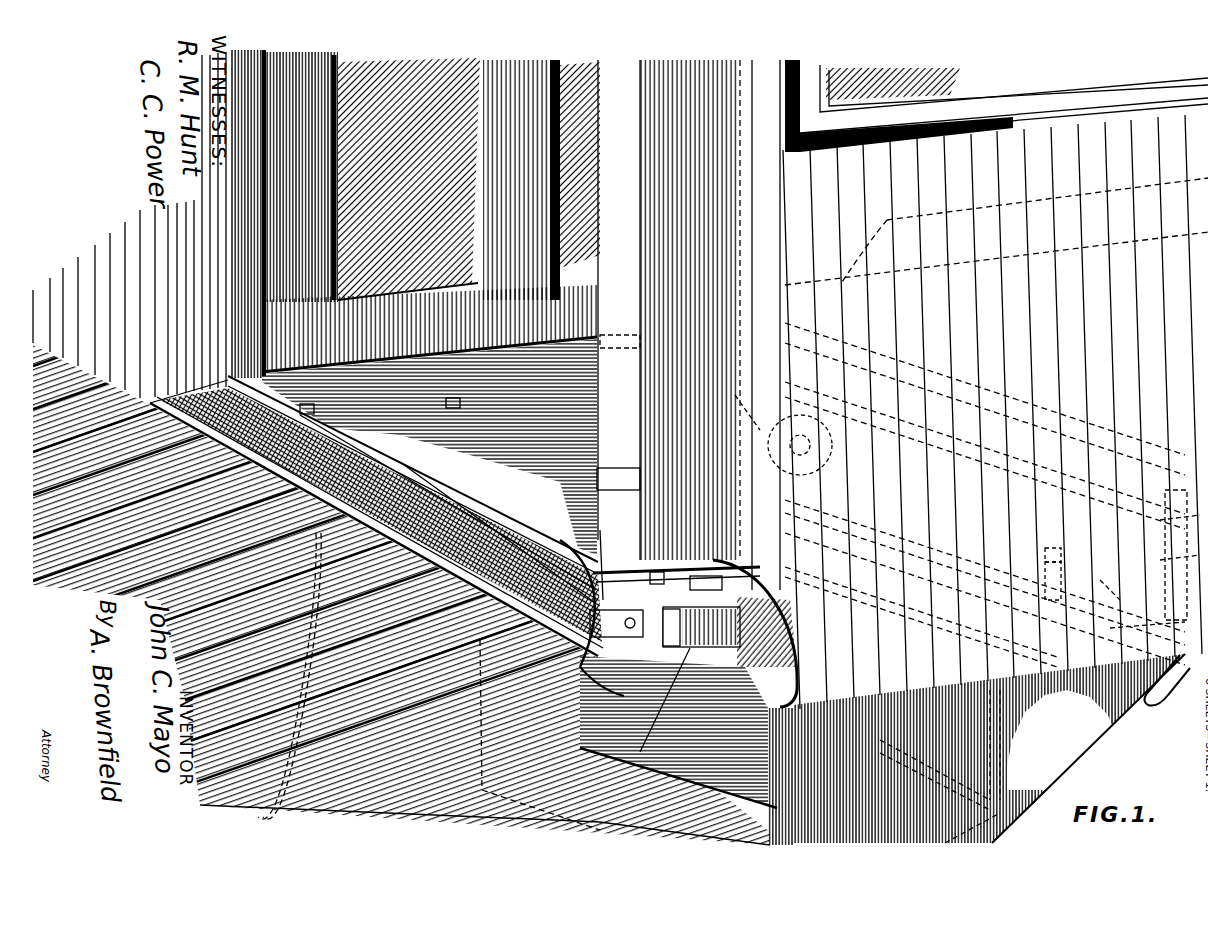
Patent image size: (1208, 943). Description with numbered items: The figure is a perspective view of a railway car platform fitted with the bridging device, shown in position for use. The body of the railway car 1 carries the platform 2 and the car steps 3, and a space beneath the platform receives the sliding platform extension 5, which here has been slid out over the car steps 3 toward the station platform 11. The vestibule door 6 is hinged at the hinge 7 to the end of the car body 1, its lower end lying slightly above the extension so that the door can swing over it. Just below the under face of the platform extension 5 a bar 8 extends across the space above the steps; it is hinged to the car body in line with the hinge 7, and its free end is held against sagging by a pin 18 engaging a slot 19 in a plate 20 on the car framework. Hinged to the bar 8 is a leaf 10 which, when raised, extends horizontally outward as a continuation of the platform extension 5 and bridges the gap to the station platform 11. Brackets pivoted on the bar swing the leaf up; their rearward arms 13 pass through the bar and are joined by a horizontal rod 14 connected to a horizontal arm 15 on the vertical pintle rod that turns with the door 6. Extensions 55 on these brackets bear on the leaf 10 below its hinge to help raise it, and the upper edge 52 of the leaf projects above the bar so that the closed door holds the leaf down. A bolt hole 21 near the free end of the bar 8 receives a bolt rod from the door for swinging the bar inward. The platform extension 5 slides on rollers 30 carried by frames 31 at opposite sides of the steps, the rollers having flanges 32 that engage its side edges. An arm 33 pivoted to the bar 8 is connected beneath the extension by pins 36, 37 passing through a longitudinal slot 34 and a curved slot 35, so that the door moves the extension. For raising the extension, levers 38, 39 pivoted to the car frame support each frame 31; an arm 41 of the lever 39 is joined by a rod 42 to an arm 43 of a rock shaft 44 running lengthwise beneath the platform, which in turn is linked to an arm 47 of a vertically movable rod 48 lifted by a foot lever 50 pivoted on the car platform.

The car body 1 is at (113, 383).
The platform 2 is at (810, 566).
The car steps 3 is at (405, 595).
The platform extension 5 is at (381, 515).
The vestibule door 6 is at (431, 212).
The hinge 7 is at (240, 333).
The bar 8 is at (402, 458).
The leaf 10 is at (385, 555).
The station platform 11 is at (401, 473).
The arms 13 is at (548, 548).
The horizontal rod 14 is at (480, 500).
The horizontal arm 15 is at (298, 399).
The pin 18 is at (450, 398).
The slot 19 is at (647, 645).
The plate 20 is at (616, 641).
The bolt hole 21 is at (602, 555).
The rollers 30 is at (745, 600).
The frames 31 is at (656, 708).
The flanges 32 is at (702, 623).
The arm 33 is at (676, 577).
The longitudinal slot 34 is at (815, 438).
The curved slot 35 is at (868, 480).
The pin 36 is at (822, 398).
The pin 37 is at (660, 440).
The lever 38 is at (835, 590).
The lever 39 is at (650, 345).
The arm 41 is at (923, 615).
The rod 42 is at (929, 490).
The arm 43 is at (790, 362).
The rock shaft 44 is at (985, 552).
The arm 47 is at (1167, 680).
The vertically movable rod 48 is at (1135, 628).
The foot lever 50 is at (1195, 490).
The upper edge 52 is at (420, 483).
The extensions 55 is at (430, 618).